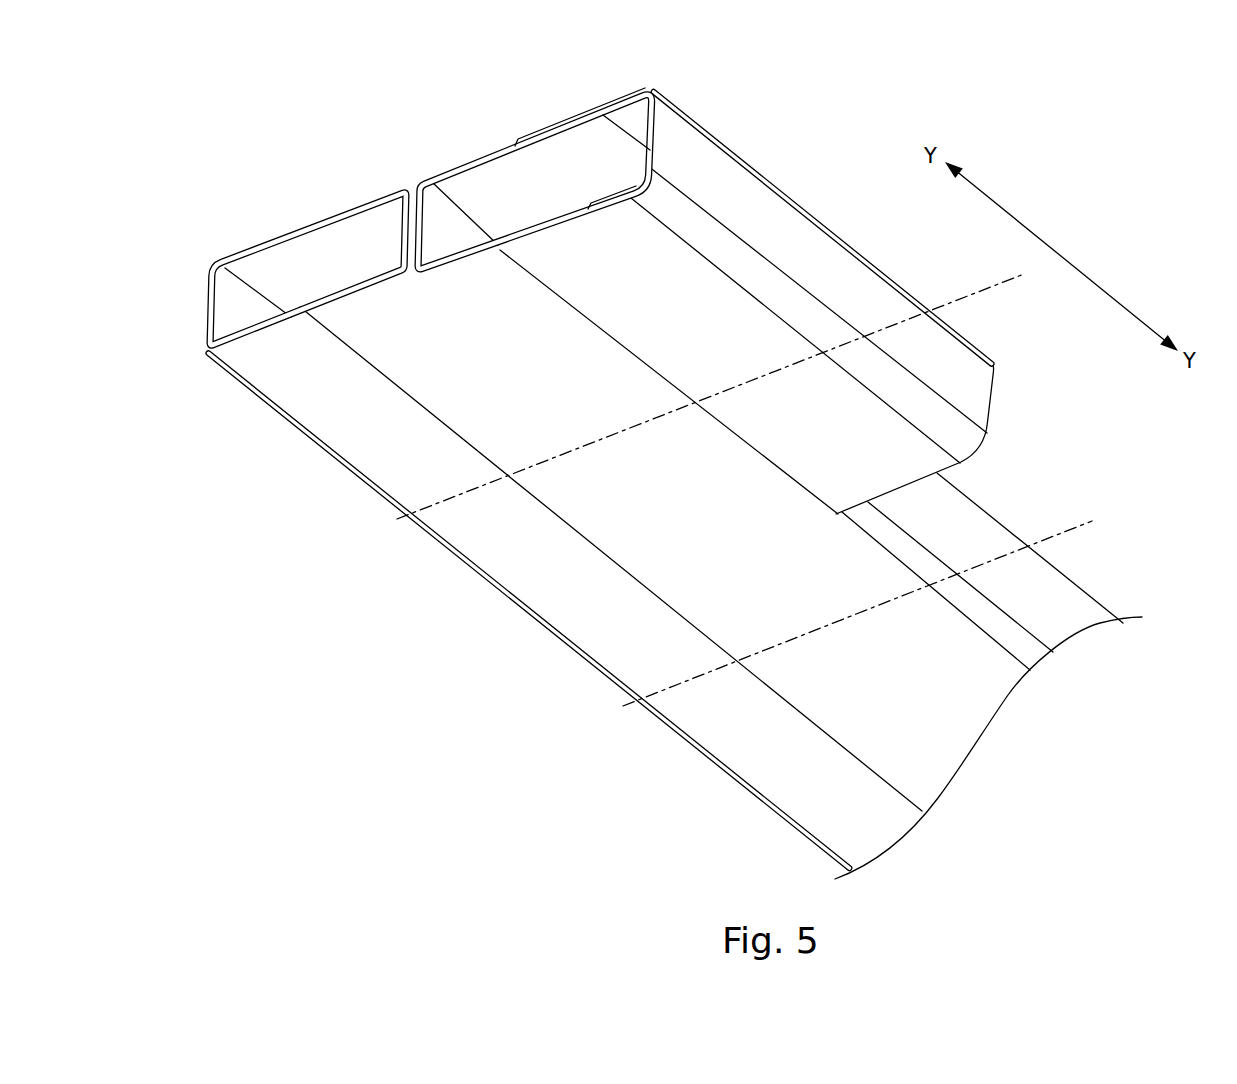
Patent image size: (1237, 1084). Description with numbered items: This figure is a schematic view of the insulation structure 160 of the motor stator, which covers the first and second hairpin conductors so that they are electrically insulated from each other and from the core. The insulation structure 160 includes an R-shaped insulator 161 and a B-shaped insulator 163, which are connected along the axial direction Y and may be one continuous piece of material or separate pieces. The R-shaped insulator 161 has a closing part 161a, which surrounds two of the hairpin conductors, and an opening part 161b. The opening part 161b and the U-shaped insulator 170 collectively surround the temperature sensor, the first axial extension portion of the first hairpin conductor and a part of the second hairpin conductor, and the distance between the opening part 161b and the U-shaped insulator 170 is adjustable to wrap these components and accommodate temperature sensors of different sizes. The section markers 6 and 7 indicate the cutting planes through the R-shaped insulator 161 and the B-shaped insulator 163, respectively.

The insulation structure 160 is at (675, 466).
The R-shaped insulator 161 is at (431, 194).
The closing part 161a is at (380, 200).
The opening part 161b is at (457, 170).
The B-shaped insulator 163 is at (761, 766).
The U-shaped insulator 170 is at (720, 163).
The section line 6- 6 is at (393, 537).
The section line 7- 7 is at (618, 725).